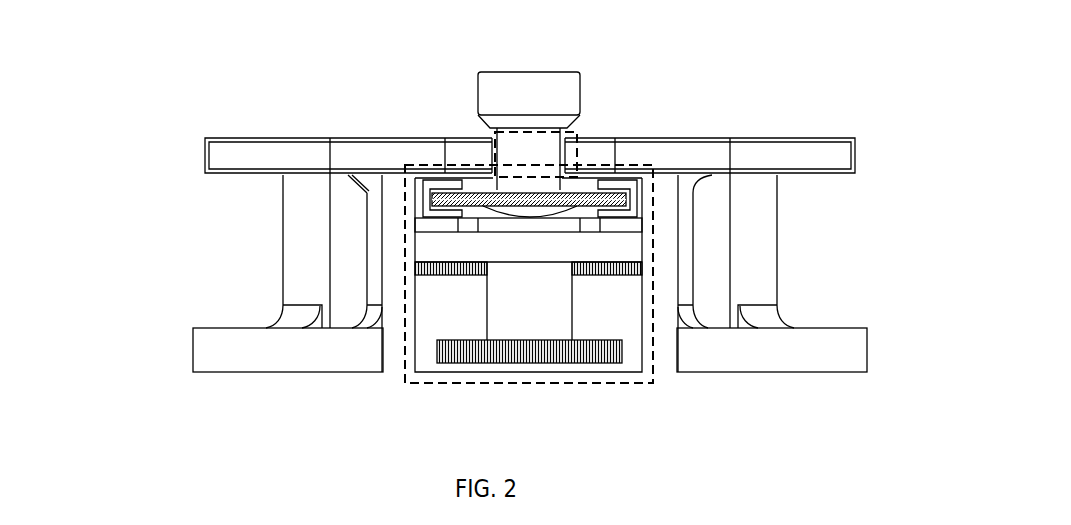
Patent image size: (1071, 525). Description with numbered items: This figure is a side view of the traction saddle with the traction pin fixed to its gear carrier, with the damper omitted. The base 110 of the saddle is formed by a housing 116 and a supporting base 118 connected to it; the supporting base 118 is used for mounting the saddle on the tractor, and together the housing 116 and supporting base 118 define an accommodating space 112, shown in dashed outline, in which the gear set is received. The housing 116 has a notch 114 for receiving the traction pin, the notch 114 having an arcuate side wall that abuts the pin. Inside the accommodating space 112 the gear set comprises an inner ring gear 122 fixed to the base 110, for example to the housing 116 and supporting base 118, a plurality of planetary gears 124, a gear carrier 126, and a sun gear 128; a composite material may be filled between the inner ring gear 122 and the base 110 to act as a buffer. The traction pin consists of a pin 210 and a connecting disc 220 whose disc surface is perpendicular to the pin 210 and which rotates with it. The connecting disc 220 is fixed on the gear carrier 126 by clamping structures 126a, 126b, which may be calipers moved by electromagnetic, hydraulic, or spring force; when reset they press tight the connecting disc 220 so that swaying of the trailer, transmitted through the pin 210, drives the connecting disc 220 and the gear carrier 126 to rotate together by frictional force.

The base 110 is at (264, 134).
The housing 116 is at (380, 153).
The supporting base 118 is at (785, 352).
The notch 114 is at (576, 146).
The accommodating space 112 is at (630, 383).
The inner ring gear 122 is at (433, 247).
The planetary gears 124 is at (435, 272).
The gear carrier 126 is at (433, 225).
The clamping structure 126a is at (438, 183).
The clamping structure 126b is at (628, 184).
The sun gear 128 is at (502, 302).
The pin 210 is at (518, 148).
The connecting disc 220 is at (597, 197).